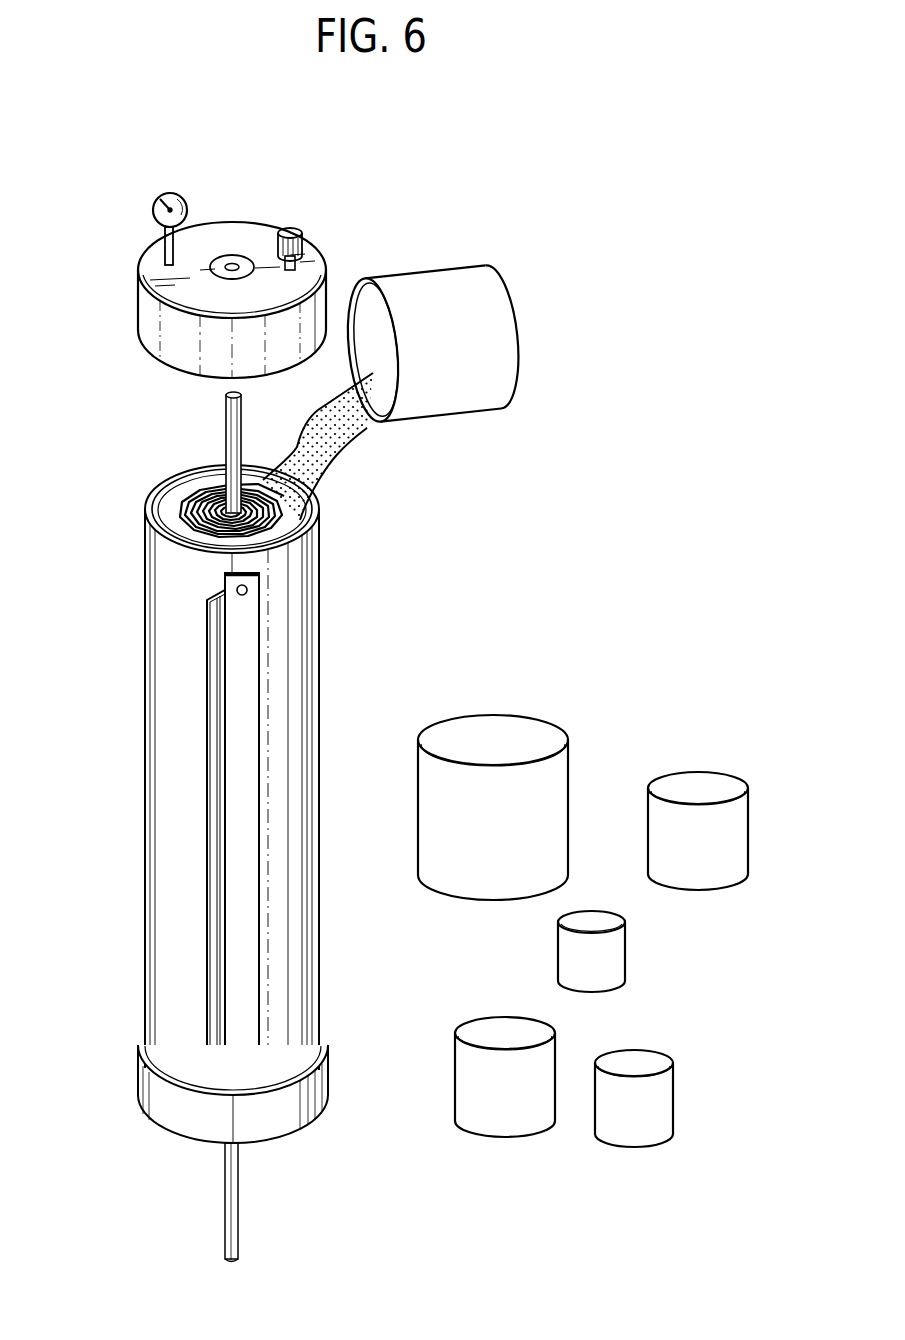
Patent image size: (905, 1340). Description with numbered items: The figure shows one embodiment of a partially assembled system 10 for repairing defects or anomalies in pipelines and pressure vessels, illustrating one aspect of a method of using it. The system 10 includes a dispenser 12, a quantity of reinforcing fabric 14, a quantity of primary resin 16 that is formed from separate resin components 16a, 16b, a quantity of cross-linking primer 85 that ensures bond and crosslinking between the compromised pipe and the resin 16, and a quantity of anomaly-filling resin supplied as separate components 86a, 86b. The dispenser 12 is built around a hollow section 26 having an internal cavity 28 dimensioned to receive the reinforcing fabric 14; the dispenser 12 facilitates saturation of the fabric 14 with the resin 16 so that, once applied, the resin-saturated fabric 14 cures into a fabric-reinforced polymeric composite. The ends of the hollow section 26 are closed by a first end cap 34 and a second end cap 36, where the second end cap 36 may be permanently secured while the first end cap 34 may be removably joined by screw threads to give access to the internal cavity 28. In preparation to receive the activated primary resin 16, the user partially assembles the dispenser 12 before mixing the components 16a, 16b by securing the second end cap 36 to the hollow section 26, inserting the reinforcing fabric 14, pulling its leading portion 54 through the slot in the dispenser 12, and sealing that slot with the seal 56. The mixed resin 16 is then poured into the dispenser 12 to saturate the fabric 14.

The system 10 is at (420, 187).
The dispenser 12 is at (170, 565).
The reinforcing fabric 14 is at (195, 495).
The primary resin 16 is at (447, 273).
The resin component 16a is at (445, 735).
The resin component 16b is at (737, 805).
The hollow section 26 is at (165, 950).
The internal cavity 28 is at (253, 478).
The first end cap 34 is at (170, 322).
The second end cap 36 is at (173, 1108).
The leading portion 54 is at (205, 635).
The seal 56 is at (262, 648).
The cross-linking primer 85 is at (600, 920).
The anomaly-filling resin component 86a is at (505, 1137).
The anomaly-filling resin component 86b is at (634, 1147).